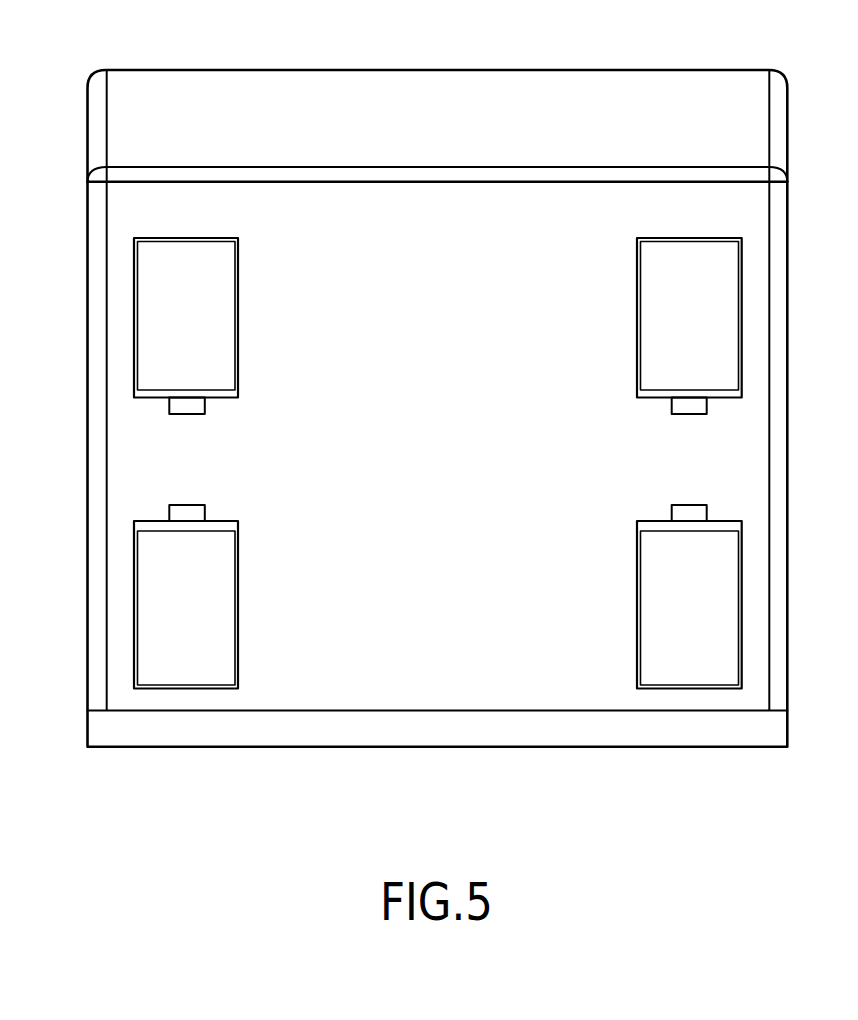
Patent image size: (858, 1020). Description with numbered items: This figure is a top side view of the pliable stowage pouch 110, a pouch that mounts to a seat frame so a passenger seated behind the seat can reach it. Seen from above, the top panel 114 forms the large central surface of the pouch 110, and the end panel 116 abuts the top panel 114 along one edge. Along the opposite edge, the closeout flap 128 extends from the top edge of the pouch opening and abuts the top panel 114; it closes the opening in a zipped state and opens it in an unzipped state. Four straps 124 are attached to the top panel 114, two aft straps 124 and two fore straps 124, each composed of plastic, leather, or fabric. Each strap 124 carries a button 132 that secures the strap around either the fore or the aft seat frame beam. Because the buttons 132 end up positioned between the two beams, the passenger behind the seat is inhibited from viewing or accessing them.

The pliable stowage pouch 110 is at (438, 43).
The top panel 114 is at (457, 462).
The end panel 116 is at (457, 138).
The straps 124 is at (205, 333).
The closeout flap 128 is at (437, 729).
The button 132 is at (186, 414).